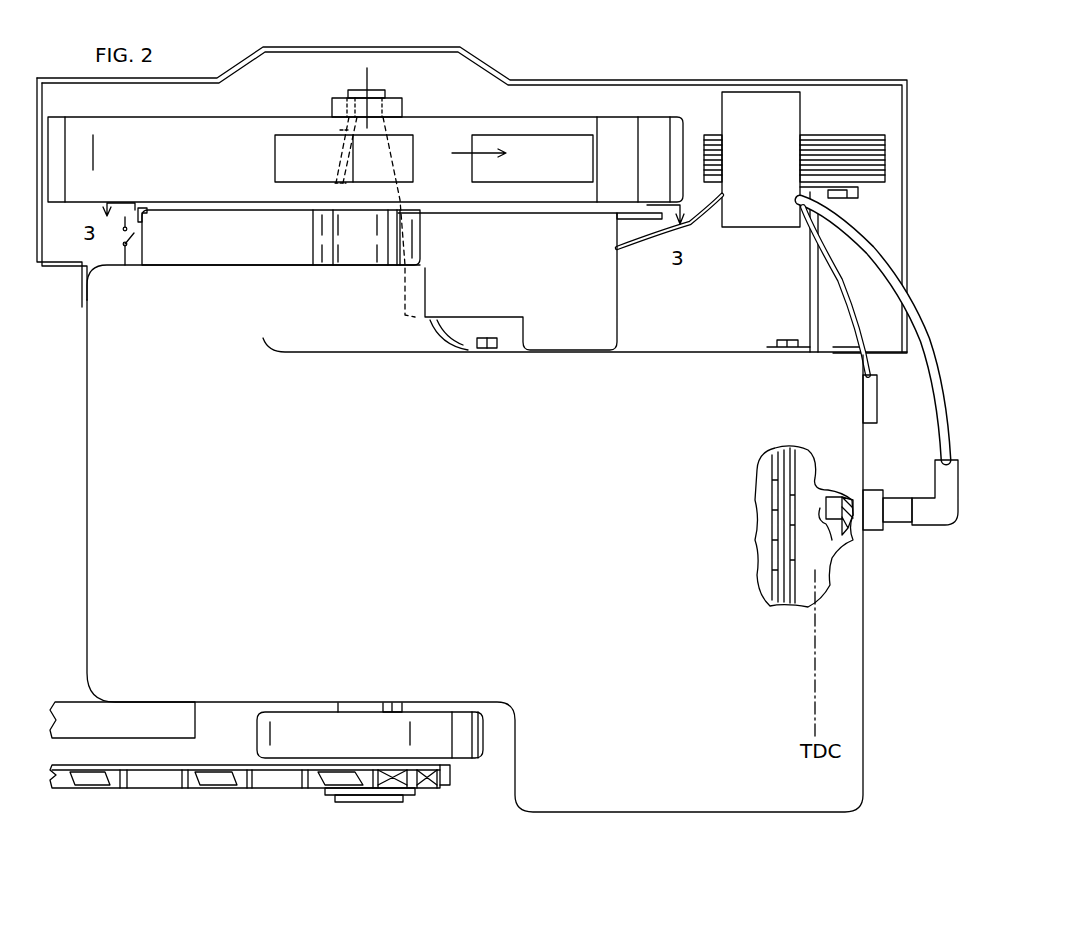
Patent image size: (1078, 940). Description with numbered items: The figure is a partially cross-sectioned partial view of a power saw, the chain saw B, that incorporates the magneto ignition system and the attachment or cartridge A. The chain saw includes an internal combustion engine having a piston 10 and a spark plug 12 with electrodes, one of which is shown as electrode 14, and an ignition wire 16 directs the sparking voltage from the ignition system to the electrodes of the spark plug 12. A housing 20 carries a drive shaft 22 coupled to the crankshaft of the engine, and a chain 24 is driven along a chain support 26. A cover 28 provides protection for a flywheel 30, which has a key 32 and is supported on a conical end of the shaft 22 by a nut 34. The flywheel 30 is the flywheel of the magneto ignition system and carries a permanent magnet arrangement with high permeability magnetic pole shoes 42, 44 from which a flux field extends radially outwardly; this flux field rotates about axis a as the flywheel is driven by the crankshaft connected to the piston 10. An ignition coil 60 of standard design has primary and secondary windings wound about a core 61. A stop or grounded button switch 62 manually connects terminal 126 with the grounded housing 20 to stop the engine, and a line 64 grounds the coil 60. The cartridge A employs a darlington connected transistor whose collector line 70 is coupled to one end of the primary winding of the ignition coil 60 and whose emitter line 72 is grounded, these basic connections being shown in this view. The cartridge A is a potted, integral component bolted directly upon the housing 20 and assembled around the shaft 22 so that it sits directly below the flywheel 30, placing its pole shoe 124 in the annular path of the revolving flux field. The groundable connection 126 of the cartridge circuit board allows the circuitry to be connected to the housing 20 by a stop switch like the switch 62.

The piston 10 is at (769, 578).
The spark plug 12 is at (897, 515).
The electrode 14 is at (826, 525).
The ignition wire 16 is at (925, 340).
The housing 20 is at (87, 540).
The drive shaft 22 is at (357, 268).
The chain 24 is at (260, 790).
The chain support 26 is at (148, 718).
The cover 28 is at (496, 64).
The flywheel 30 is at (660, 116).
The key 32 is at (345, 168).
The nut 34 is at (400, 105).
The magnetic pole shoe 42 is at (568, 145).
The magnetic pole shoe 44 is at (400, 145).
The ignition coil 60 is at (818, 131).
The core 61 is at (885, 150).
The button switch 62 is at (135, 238).
The line 64 is at (852, 340).
The collector line 70 is at (707, 215).
The emitter line 72 is at (458, 325).
The pole shoe 124 is at (635, 218).
The groundable connection 126 is at (145, 218).
The cartridge A is at (616, 305).
The chain saw B is at (697, 814).
The axis a is at (370, 80).